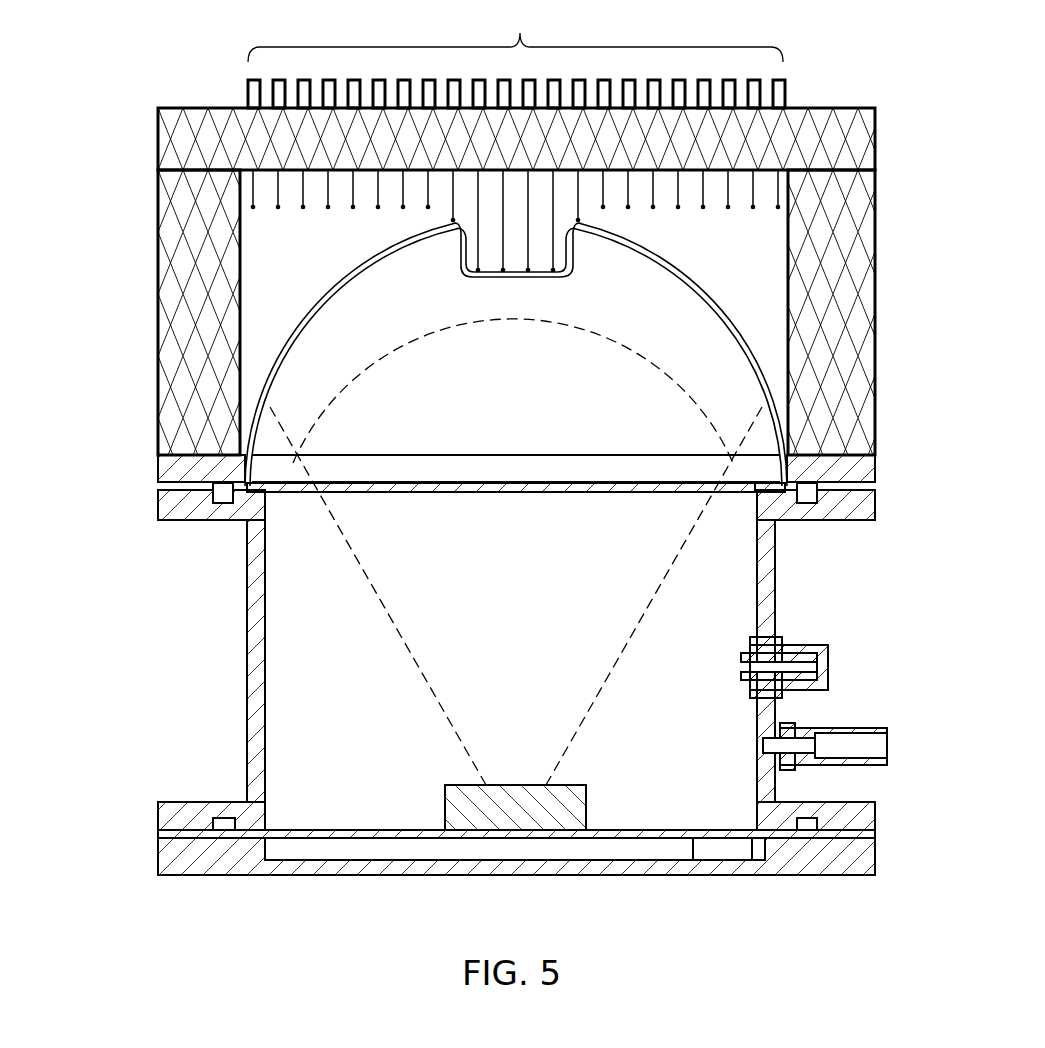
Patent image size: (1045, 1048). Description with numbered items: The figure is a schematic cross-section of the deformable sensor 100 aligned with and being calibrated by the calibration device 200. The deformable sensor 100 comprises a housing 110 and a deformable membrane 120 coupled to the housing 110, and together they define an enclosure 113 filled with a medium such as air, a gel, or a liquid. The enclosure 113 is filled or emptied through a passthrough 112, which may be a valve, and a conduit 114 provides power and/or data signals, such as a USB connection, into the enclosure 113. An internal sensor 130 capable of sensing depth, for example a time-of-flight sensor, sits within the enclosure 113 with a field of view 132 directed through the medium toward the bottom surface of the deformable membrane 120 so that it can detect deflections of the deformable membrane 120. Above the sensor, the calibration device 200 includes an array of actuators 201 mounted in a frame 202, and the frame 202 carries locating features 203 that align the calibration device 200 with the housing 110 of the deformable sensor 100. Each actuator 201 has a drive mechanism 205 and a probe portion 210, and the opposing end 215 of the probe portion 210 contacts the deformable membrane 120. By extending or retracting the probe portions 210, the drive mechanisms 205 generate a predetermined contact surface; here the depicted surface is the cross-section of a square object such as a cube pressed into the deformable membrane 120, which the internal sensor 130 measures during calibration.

The calibration device 200 is at (458, 244).
The actuators 201 is at (515, 32).
The frame 202 is at (158, 140).
The locating features 203 is at (158, 248).
The drive mechanism 205 is at (248, 90).
The probe portion 210 is at (253, 198).
The end 215 is at (257, 219).
The deformable membrane 120 is at (628, 252).
The deformable sensor 100 is at (496, 597).
The housing 110 is at (453, 652).
The enclosure 113 is at (275, 652).
The passthrough 112 is at (824, 628).
The conduit 114 is at (880, 713).
The internal sensor 130 is at (588, 810).
The field of view 132 is at (415, 650).